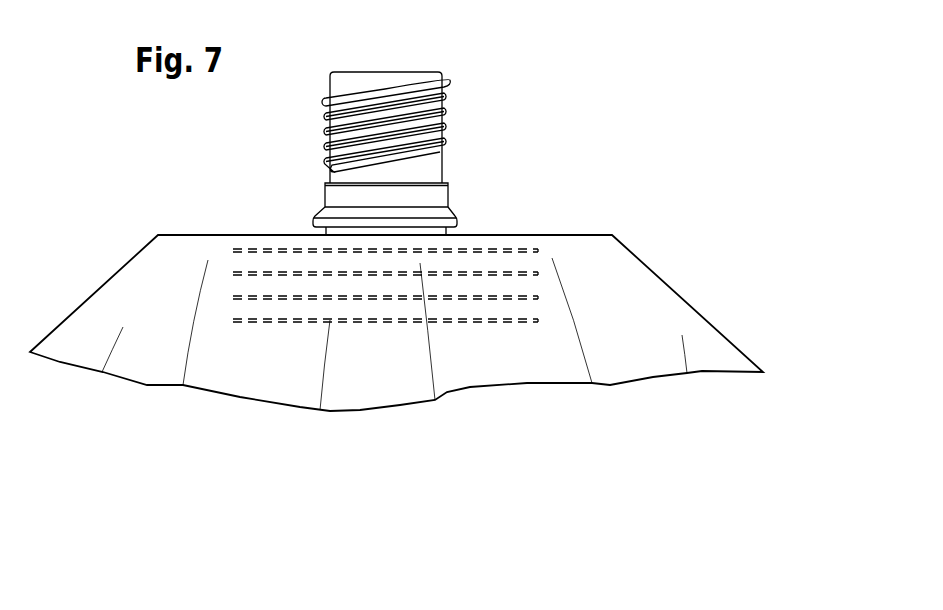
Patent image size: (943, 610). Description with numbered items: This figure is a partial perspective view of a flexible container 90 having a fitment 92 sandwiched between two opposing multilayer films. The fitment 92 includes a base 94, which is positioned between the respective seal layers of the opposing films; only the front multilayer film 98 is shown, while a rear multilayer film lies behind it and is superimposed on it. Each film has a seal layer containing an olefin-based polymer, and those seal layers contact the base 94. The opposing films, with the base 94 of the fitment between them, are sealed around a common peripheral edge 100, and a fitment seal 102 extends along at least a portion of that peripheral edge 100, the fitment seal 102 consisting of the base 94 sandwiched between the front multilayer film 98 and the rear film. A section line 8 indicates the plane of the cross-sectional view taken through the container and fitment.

The section line 8- 8 is at (373, 17).
The flexible container 90 is at (411, 145).
The fitment 92 is at (494, 163).
The base 94 is at (288, 247).
The front multilayer film 98 is at (105, 302).
The peripheral edge 100 is at (542, 235).
The fitment seal 102 is at (265, 262).